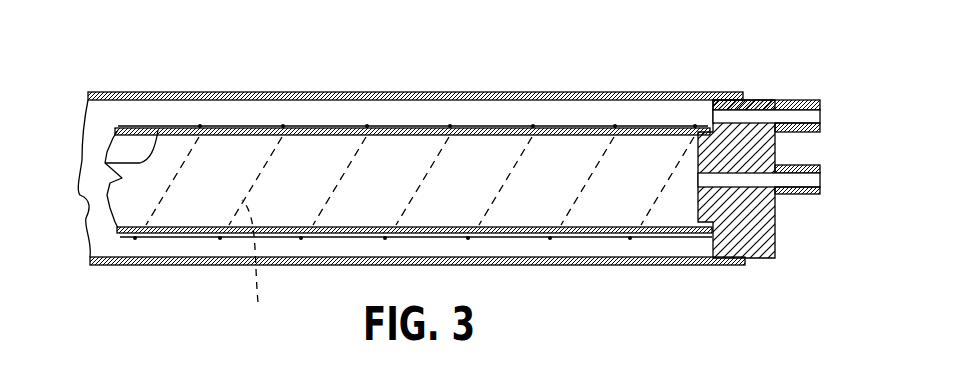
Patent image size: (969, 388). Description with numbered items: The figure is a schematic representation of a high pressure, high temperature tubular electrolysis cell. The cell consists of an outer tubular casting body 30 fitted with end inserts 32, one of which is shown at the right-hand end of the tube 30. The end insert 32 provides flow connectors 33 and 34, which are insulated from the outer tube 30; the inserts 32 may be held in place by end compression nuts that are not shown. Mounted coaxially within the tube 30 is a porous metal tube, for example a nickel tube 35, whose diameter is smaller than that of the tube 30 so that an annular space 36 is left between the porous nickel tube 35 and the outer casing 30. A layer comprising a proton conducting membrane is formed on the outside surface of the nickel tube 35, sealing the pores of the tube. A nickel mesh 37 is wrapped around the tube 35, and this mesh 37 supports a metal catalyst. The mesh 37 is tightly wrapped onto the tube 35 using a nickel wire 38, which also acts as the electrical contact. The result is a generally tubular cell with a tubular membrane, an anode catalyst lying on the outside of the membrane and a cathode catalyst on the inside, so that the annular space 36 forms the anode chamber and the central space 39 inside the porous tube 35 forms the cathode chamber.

The outer tubular casting body 30 is at (488, 92).
The end insert 32 is at (763, 247).
The flow connector 33 is at (755, 115).
The flow connector 34 is at (786, 178).
The porous nickel tube 35 is at (107, 163).
The annular space 36 is at (167, 115).
The nickel mesh 37 is at (320, 128).
The nickel wire 38 is at (302, 237).
The central space 39 is at (475, 191).